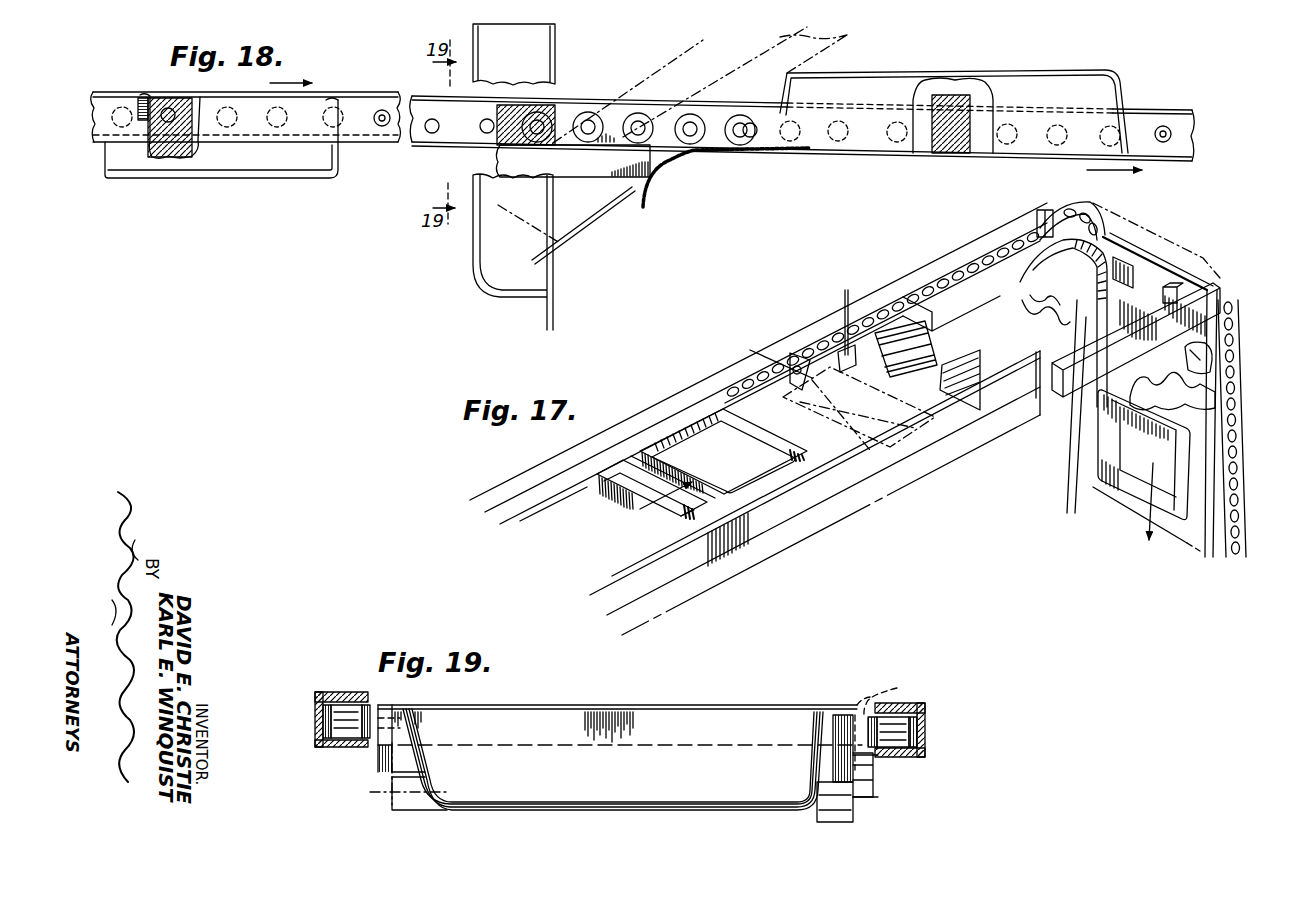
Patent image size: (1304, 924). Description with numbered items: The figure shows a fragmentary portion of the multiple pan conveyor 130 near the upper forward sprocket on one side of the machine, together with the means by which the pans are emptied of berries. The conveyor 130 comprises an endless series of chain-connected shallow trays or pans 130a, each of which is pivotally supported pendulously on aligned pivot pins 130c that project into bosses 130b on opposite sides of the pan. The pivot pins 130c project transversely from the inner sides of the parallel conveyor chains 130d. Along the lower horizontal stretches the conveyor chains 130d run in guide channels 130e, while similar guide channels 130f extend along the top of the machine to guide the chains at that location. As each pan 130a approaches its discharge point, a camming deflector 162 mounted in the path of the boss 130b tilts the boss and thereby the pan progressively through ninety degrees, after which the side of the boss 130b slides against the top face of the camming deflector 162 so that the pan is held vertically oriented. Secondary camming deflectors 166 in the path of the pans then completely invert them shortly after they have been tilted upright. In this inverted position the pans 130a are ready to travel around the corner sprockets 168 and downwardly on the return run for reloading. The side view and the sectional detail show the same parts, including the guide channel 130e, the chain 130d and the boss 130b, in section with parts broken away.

In FIG. 17, the conveyor 130 is at (1216, 243).
In FIG. 19, the conveyor 130 is at (880, 680).
In FIG. 18, the pan 130a is at (307, 167).
In FIG. 17, the pan 130a is at (597, 522).
In FIG. 19, the pan 130a is at (777, 708).
In FIG. 18, the boss 130b is at (197, 160).
In FIG. 17, the boss 130b is at (785, 382).
In FIG. 19, the boss 130b is at (407, 765).
In FIG. 19, the pivot pin 130c is at (899, 698).
In FIG. 18, the conveyor chain 130d is at (390, 102).
In FIG. 19, the conveyor chain 130d is at (343, 730).
In FIG. 19, the guide channel 130e is at (323, 693).
In FIG. 18, the guide channel 130f is at (353, 92).
In FIG. 17, the guide channel 130f is at (713, 372).
In FIG. 18, the camming deflector 162 is at (500, 153).
In FIG. 17, the camming deflector 162 is at (850, 280).
In FIG. 19, the camming deflector 162 is at (370, 780).
In FIG. 18, the secondary camming deflector 166 is at (657, 190).
In FIG. 17, the secondary camming deflector 166 is at (930, 350).
In FIG. 19, the secondary camming deflector 166 is at (403, 810).
In FIG. 17, the corner sprocket 168 is at (1025, 322).